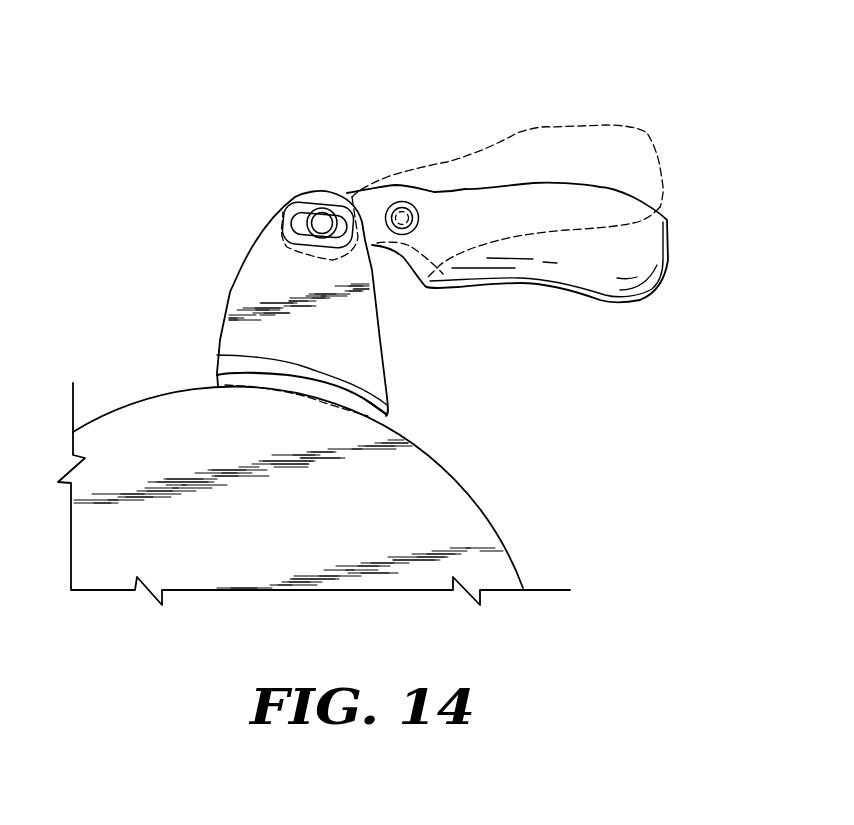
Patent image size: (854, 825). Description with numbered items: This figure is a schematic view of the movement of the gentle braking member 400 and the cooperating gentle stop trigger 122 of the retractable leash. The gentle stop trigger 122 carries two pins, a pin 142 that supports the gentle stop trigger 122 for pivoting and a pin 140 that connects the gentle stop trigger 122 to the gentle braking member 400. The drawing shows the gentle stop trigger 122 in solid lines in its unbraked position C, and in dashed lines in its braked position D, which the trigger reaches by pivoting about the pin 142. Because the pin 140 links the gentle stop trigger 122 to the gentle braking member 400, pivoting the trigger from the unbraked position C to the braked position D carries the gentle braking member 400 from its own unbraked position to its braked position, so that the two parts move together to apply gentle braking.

The gentle braking member 400 is at (373, 342).
The pin 140 is at (325, 222).
The pin 142 is at (402, 212).
The gentle stop trigger 122 is at (583, 293).
The unbraked position of the gentle stop trigger C is at (234, 266).
The braked position of the gentle stop trigger D is at (606, 116).